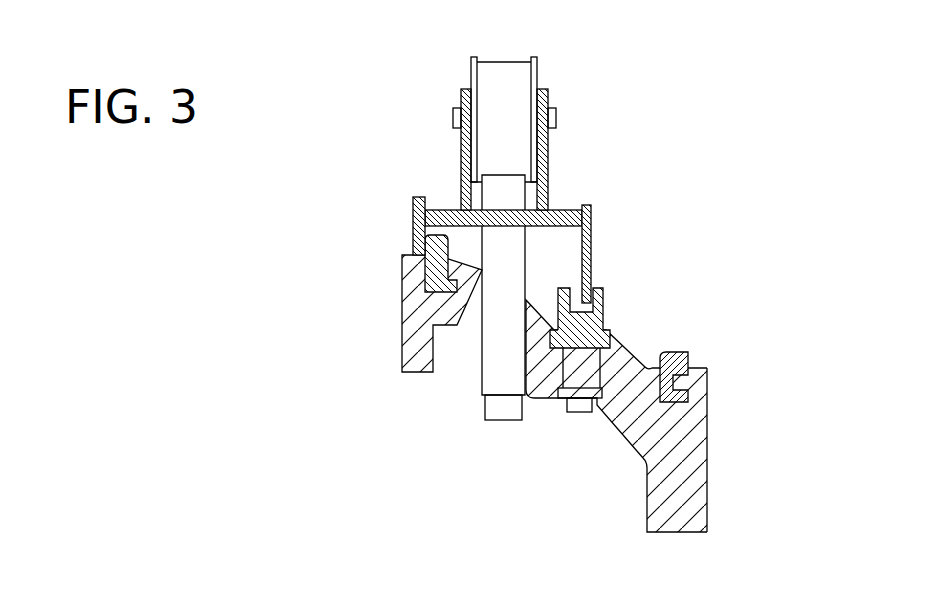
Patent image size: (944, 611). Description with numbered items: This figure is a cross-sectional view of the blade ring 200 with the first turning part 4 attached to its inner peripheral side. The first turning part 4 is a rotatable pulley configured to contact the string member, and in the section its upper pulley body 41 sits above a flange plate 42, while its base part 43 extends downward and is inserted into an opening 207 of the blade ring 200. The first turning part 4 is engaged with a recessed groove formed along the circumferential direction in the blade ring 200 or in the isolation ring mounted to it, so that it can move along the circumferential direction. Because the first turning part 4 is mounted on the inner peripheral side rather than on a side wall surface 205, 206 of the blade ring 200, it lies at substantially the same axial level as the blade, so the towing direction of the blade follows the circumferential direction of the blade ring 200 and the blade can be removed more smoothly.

The first turning part 4 is at (545, 105).
The cylindrical member 41 is at (505, 75).
The flange plate 42 is at (593, 232).
The base part 43 is at (504, 425).
The blade ring 200 is at (612, 442).
The side wall surface 205 is at (402, 343).
The side wall surface 206 is at (707, 473).
The opening 207 is at (485, 331).